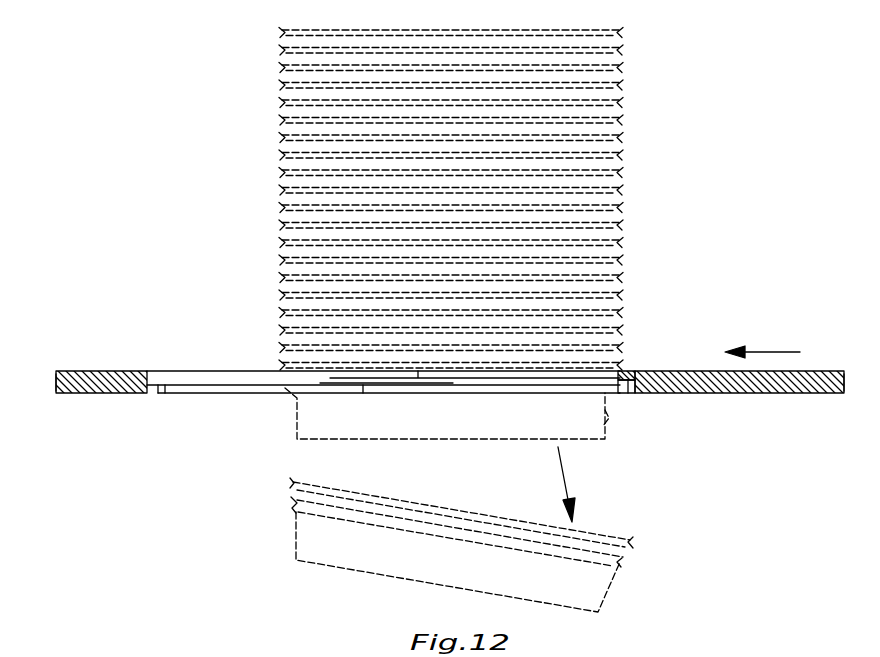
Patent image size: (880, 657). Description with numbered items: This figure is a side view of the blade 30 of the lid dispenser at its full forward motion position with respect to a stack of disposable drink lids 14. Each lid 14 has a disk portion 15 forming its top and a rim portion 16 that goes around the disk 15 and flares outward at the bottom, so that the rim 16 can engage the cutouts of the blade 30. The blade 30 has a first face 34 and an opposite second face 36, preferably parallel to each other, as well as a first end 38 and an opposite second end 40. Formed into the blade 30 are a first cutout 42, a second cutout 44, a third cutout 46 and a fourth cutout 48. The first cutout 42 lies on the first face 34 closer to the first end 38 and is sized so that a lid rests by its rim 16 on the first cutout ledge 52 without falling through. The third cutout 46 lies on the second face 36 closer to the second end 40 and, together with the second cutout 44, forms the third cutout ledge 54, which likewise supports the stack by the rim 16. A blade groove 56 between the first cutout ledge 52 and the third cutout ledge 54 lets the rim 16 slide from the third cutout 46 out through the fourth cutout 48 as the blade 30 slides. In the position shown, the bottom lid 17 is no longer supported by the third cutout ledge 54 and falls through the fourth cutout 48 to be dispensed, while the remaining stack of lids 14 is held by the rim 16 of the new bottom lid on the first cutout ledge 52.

The disposable drink lid 14 is at (452, 30).
The disk portion 15 is at (464, 440).
The rim portion 16 is at (280, 33).
The first lid 17 is at (587, 421).
The blade 30 is at (748, 298).
The first face 34 is at (120, 371).
The second face 36 is at (775, 393).
The first end 38 is at (846, 383).
The second end 40 is at (56, 382).
The first cutout 42 is at (560, 378).
The second cutout 44 is at (225, 378).
The third cutout 46 is at (233, 392).
The fourth cutout 48 is at (628, 393).
The first cutout ledge 52 is at (624, 371).
The third cutout ledge 54 is at (158, 395).
The blade groove 56 is at (390, 384).